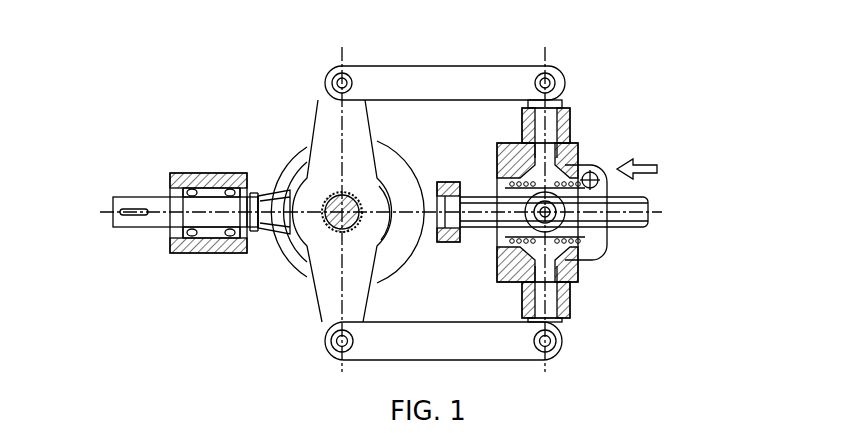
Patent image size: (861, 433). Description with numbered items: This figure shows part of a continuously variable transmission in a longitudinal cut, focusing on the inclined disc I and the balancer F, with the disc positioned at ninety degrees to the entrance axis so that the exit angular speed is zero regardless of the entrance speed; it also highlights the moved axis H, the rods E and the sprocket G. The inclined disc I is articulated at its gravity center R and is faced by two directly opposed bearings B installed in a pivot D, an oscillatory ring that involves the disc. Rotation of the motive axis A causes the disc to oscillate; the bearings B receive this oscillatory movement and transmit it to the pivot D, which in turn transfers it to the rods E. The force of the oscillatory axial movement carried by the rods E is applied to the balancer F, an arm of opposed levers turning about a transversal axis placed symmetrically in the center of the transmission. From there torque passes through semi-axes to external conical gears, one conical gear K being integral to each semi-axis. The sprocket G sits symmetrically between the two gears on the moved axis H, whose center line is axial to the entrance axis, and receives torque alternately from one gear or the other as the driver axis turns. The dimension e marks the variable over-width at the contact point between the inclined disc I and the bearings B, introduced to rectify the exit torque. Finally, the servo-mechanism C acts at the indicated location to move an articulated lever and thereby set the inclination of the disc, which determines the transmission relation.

The motive axis A is at (667, 212).
The bearings B is at (649, 294).
The servo-mechanism C is at (657, 169).
The pivot D is at (615, 112).
The rod E is at (445, 57).
The balancer F is at (250, 172).
The sprocket G is at (207, 157).
The moved axis H is at (138, 189).
The inclined disc I is at (491, 224).
The conical gear K is at (229, 234).
The gravity center R is at (688, 218).
The variable over-width e is at (490, 132).